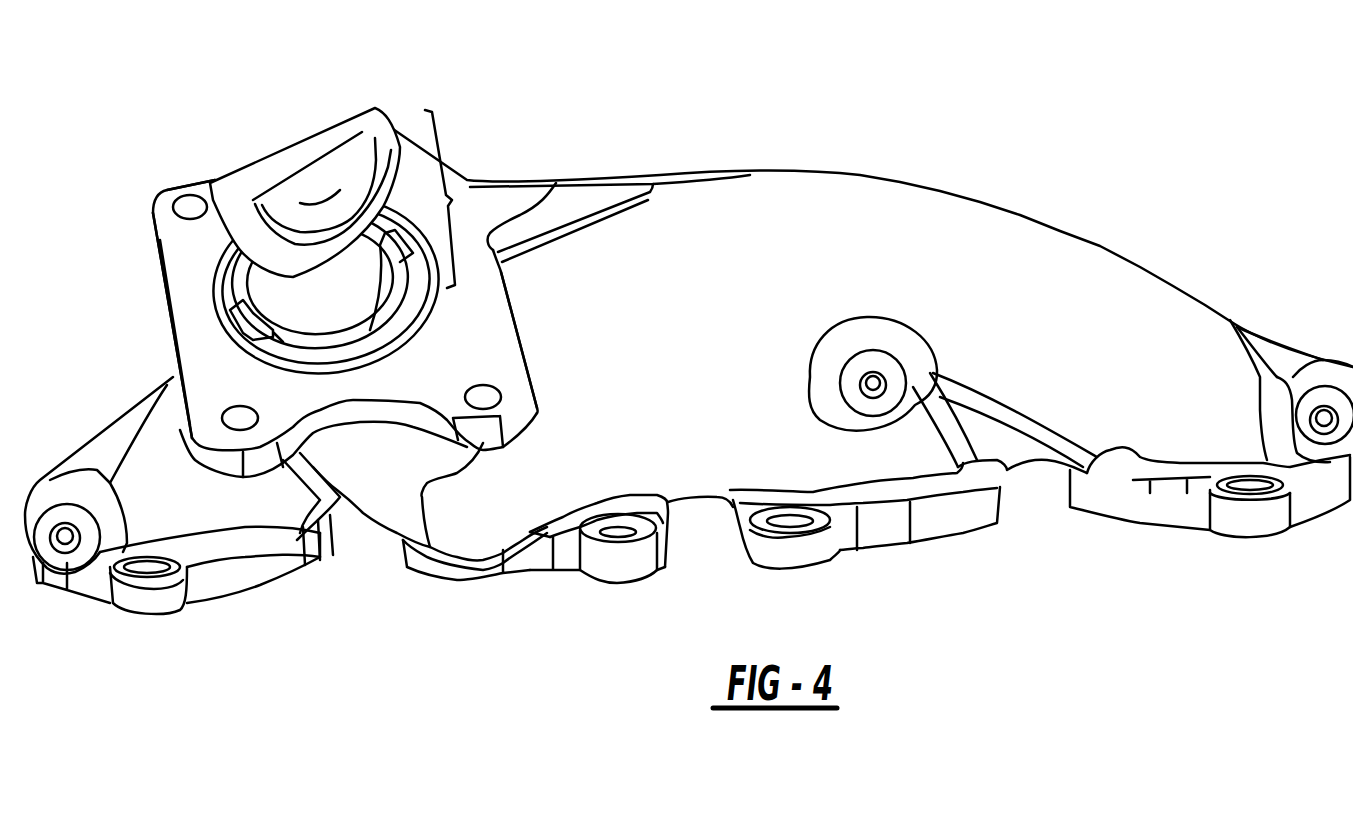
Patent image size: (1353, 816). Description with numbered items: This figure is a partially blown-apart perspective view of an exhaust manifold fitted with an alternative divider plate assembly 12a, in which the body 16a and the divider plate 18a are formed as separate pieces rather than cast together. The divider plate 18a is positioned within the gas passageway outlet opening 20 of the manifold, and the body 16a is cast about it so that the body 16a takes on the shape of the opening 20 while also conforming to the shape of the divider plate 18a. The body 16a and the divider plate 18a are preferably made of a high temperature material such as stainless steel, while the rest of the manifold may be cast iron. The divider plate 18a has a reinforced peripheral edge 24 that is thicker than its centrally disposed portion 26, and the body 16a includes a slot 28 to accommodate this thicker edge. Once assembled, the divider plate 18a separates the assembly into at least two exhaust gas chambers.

The divider plate assembly 12a is at (689, 362).
The body 16a is at (232, 268).
The divider plate 18a is at (330, 155).
The opening 20 is at (245, 357).
The reinforced peripheral edge 24 is at (403, 133).
The centrally disposed portion 26 is at (300, 203).
The slot 28 is at (233, 272).